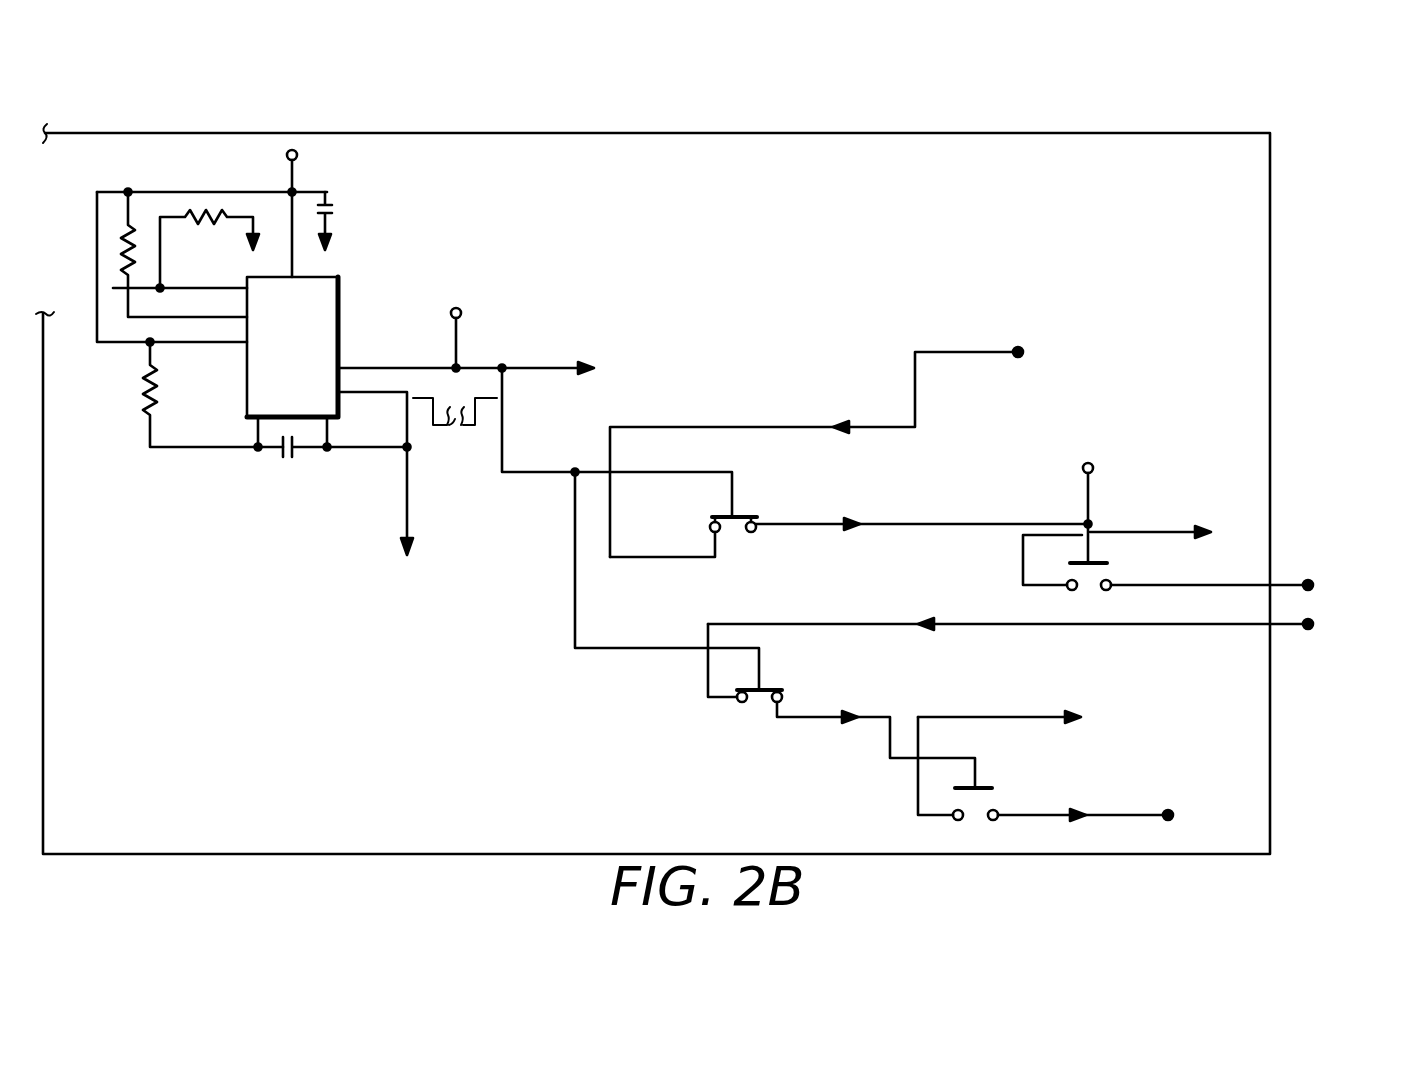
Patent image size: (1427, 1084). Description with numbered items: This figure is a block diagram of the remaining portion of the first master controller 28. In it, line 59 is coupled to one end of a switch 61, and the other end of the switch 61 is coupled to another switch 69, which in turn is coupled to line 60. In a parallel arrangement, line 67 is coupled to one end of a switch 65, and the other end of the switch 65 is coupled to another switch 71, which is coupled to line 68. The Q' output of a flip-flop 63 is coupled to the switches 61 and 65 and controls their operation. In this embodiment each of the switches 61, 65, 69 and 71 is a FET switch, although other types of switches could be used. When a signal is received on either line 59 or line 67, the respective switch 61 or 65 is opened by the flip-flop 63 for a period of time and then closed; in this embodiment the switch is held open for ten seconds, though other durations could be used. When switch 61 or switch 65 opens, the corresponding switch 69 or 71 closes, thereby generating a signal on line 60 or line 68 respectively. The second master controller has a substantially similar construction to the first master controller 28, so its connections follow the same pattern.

The first master controller 28 is at (1288, 412).
The flip-flop 63 is at (340, 297).
The line 59 is at (984, 360).
The switch 61 is at (735, 508).
The switch 69 is at (1092, 531).
The line 60 is at (1222, 590).
The line 67 is at (908, 627).
The switch 65 is at (762, 660).
The switch 71 is at (975, 770).
The line 68 is at (1143, 818).